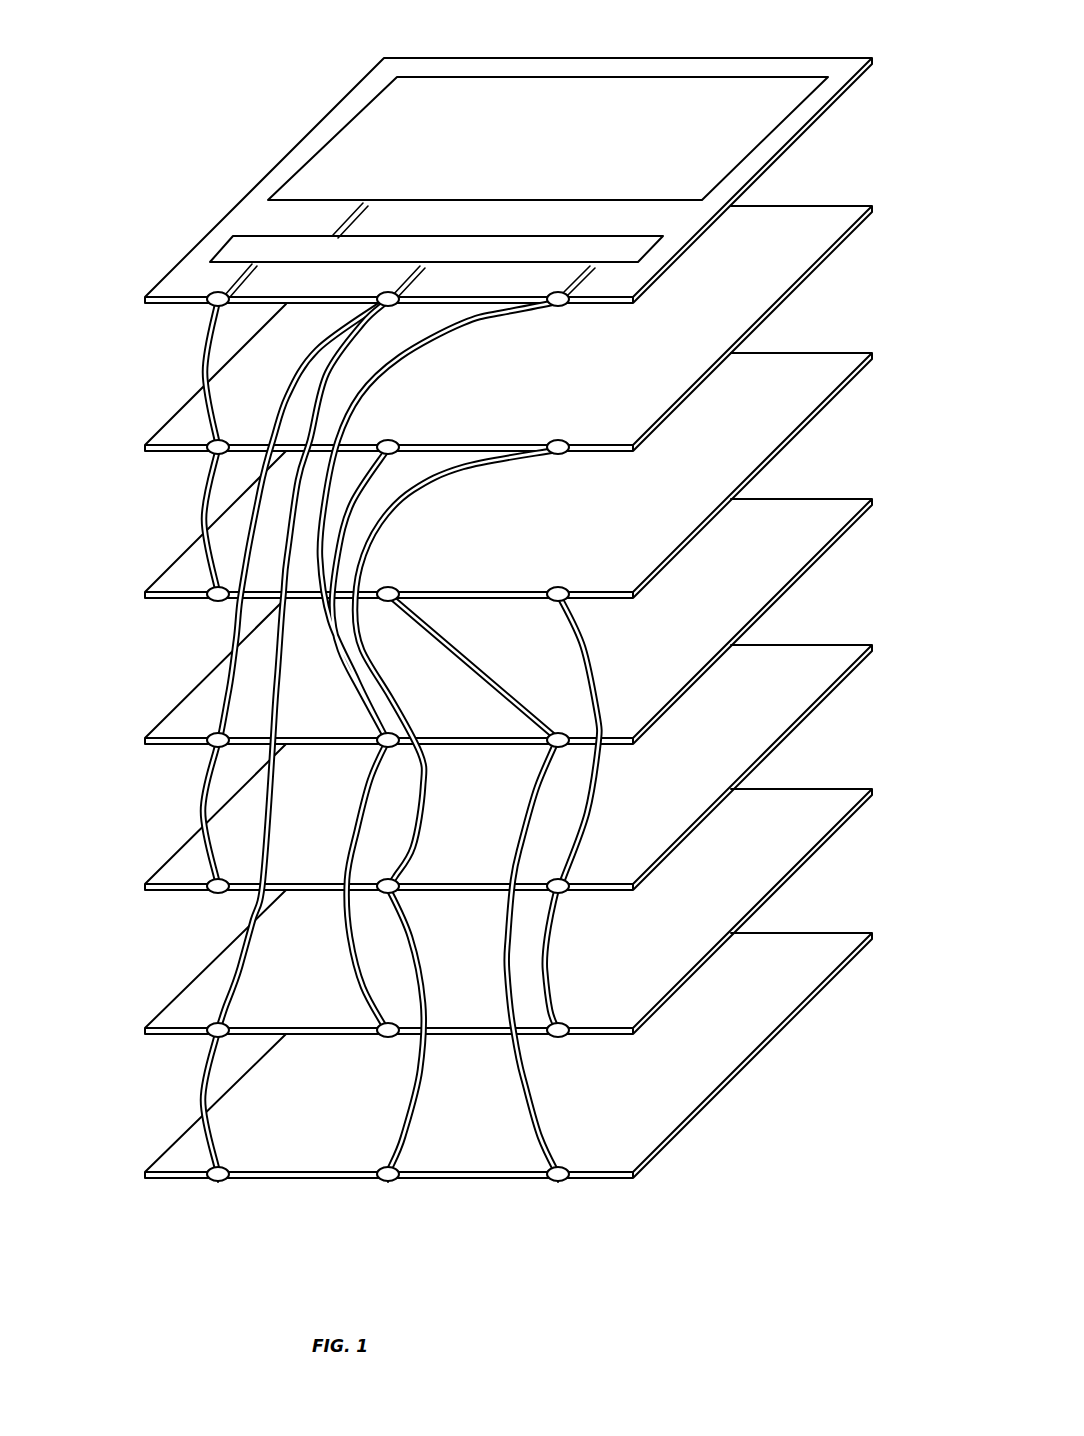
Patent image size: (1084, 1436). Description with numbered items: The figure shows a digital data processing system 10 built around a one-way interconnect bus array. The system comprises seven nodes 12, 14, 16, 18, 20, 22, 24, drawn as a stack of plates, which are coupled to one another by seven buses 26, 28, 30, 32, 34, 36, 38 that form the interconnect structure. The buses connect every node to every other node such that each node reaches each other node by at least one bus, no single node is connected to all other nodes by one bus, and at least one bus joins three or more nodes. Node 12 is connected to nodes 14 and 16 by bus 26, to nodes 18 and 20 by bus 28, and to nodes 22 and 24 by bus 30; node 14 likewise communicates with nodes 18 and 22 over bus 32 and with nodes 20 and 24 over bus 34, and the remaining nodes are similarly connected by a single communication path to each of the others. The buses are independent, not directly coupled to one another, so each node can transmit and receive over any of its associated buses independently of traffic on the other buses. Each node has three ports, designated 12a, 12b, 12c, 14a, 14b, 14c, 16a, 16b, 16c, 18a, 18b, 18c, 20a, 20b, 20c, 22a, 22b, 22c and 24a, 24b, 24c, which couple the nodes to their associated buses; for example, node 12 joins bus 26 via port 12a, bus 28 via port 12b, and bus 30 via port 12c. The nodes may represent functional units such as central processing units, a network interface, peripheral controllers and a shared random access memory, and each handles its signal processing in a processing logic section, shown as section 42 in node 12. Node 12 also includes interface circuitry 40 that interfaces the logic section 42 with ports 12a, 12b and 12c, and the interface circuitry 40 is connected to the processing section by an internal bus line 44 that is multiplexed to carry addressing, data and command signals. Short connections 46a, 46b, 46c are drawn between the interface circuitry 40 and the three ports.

The digital data processing system 10 is at (162, 96).
The node 12 is at (818, 62).
The node 14 is at (808, 212).
The node 16 is at (808, 359).
The node 18 is at (798, 505).
The node 20 is at (795, 650).
The node 22 is at (795, 797).
The node 24 is at (795, 940).
The port 12a is at (208, 307).
The port 12b is at (388, 308).
The port 12c is at (556, 307).
The port 14a is at (222, 440).
The port 14b is at (394, 440).
The port 14c is at (566, 440).
The port 16a is at (215, 603).
The port 16b is at (394, 586).
The port 16c is at (562, 586).
The port 18a is at (212, 750).
The port 18b is at (376, 750).
The port 18c is at (560, 731).
The port 20a is at (214, 896).
The port 20b is at (400, 880).
The port 20c is at (566, 897).
The port 22a is at (212, 1040).
The port 22b is at (382, 1040).
The port 22c is at (561, 1040).
The port 24a is at (214, 1186).
The port 24b is at (386, 1186).
The port 24c is at (556, 1186).
The bus 26 is at (203, 362).
The bus 28 is at (226, 680).
The bus 30 is at (240, 968).
The bus 32 is at (350, 952).
The bus 34 is at (415, 1092).
The bus 36 is at (512, 1090).
The bus 38 is at (548, 970).
The interface circuitry 40 is at (240, 247).
The processing logic section 42 is at (335, 148).
The internal bus line 44 is at (353, 207).
The interface connection 46a is at (244, 275).
The interface connection 46b is at (412, 275).
The interface connection 46c is at (580, 275).